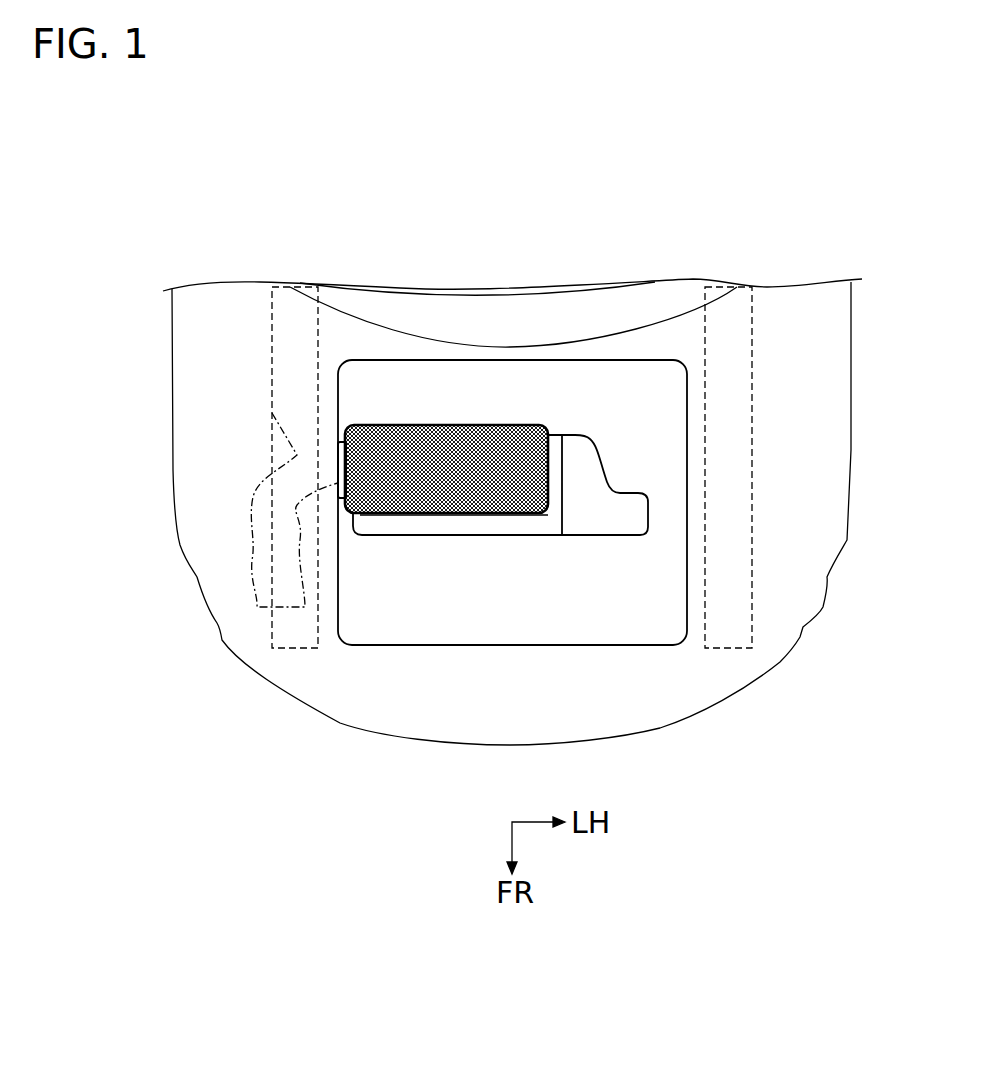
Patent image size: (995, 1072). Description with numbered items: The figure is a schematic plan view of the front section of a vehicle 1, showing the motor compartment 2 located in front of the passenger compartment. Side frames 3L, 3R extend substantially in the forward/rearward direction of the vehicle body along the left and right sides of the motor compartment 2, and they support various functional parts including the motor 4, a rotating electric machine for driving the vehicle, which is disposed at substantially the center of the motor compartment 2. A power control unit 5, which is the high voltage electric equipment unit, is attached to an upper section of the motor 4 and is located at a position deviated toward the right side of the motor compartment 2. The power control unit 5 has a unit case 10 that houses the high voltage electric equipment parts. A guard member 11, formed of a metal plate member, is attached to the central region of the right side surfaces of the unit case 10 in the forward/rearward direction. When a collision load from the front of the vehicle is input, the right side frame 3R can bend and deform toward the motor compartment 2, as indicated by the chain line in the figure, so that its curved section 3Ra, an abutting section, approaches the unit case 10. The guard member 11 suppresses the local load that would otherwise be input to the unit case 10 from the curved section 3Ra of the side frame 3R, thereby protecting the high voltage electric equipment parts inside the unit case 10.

The vehicle 1 is at (712, 258).
The motor compartment 2 is at (625, 618).
The side frame 3R is at (257, 607).
The side frame 3L is at (752, 628).
The curved section 3Ra is at (345, 455).
The motor 4 is at (462, 530).
The power control unit 5 is at (405, 514).
The unit case 10 is at (378, 424).
The guard member 11 is at (338, 483).